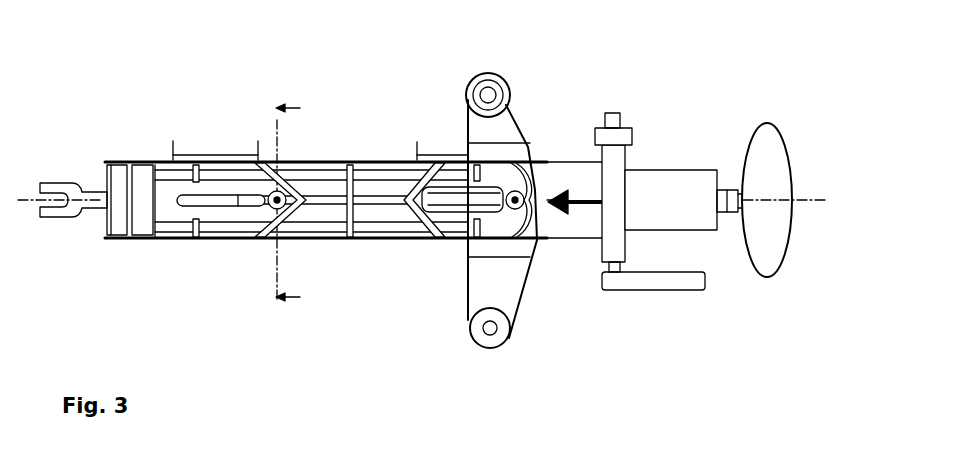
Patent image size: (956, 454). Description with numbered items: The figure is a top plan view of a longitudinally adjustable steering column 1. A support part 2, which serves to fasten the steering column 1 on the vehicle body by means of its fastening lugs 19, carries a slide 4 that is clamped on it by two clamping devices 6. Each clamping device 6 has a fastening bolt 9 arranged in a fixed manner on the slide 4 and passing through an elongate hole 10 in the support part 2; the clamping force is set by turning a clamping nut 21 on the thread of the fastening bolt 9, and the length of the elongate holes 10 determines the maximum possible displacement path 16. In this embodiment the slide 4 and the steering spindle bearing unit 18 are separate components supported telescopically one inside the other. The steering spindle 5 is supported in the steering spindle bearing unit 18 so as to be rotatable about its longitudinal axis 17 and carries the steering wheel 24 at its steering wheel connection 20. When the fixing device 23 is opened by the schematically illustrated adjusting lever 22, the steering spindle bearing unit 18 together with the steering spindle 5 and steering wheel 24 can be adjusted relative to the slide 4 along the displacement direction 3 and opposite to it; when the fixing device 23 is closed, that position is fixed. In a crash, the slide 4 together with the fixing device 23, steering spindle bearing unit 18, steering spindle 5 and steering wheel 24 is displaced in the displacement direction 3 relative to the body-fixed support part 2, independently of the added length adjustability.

The steering column 1 is at (448, 60).
The support part 2 is at (353, 160).
The displacement direction 3 is at (577, 208).
The slide 4 is at (553, 172).
The steering spindle 5 is at (729, 187).
The clamping device 6 is at (268, 208).
The fastening bolt 9 is at (268, 158).
The elongate hole 10 is at (185, 232).
The maximum possible displacement path 16 is at (205, 150).
The longitudinal axis 17 is at (812, 203).
The steering spindle bearing unit 18 is at (680, 177).
The fastening lug 19 is at (500, 70).
The steering wheel connection 20 is at (735, 218).
The clamping nut 21 is at (303, 160).
The adjusting lever 22 is at (672, 283).
The fixing device 23 is at (620, 167).
The steering wheel 24 is at (775, 167).